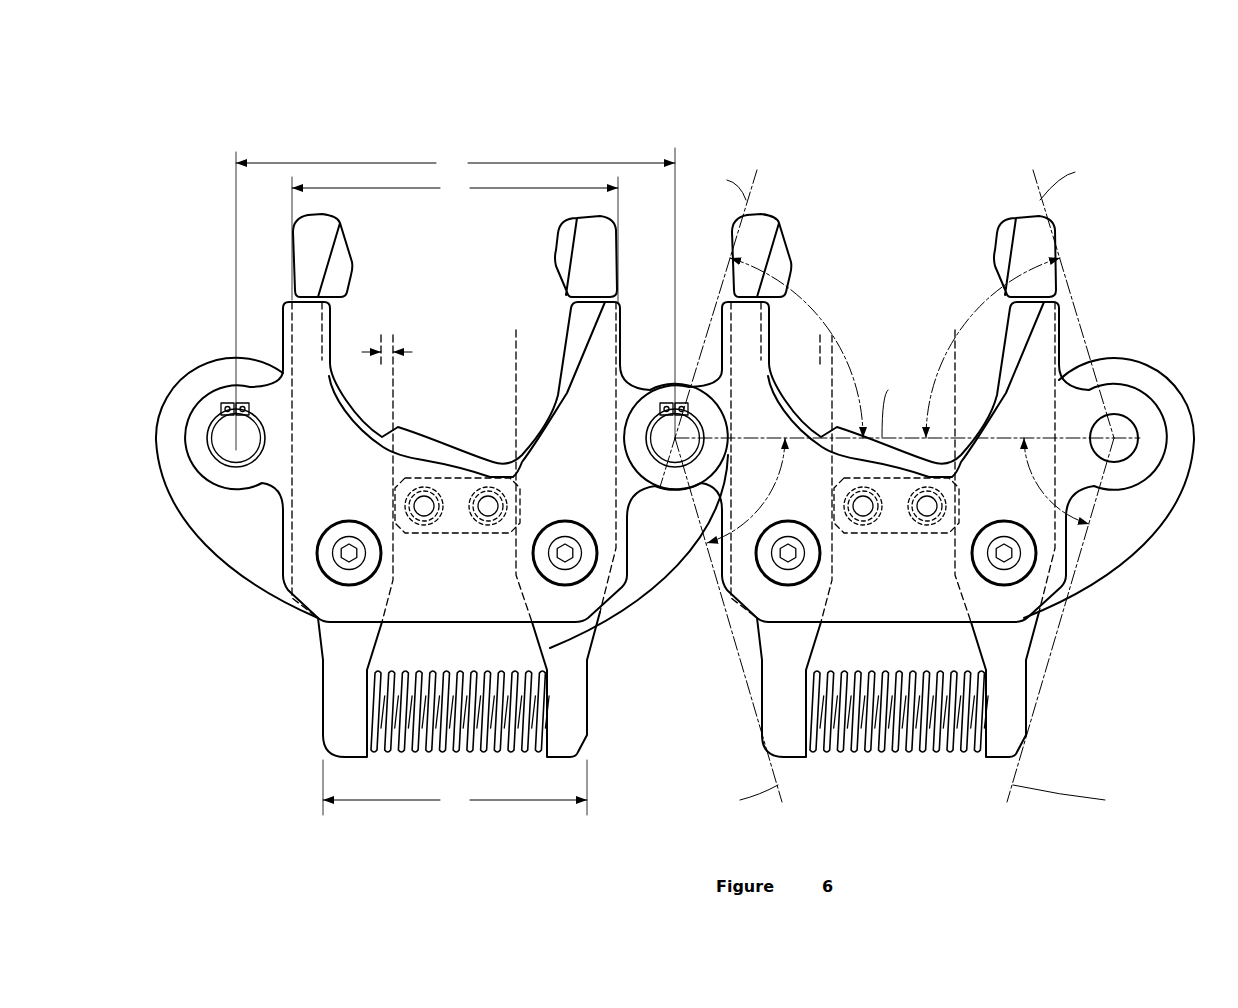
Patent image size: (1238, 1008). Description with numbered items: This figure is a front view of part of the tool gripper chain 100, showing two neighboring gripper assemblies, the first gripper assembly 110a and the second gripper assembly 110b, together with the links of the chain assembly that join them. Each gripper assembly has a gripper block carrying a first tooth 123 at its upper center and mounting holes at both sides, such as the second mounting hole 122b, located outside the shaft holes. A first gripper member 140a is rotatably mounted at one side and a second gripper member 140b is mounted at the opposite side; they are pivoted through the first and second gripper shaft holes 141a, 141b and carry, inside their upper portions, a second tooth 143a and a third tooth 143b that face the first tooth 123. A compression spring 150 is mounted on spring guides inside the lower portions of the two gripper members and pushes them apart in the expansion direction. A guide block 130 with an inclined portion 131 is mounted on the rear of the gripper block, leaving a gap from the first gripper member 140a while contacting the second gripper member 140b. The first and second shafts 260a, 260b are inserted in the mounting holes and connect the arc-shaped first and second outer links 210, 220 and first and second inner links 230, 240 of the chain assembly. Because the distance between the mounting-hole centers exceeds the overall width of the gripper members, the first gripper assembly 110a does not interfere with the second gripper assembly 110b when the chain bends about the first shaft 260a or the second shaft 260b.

The tool gripper chain 100 is at (674, 449).
The first gripper assembly 110a is at (368, 148).
The second gripper assembly 110b is at (1009, 148).
The second mounting hole 122b is at (1118, 437).
The first tooth 123 is at (420, 430).
The guide block 130 is at (449, 476).
The inclined portion 131 is at (397, 537).
The first gripper member 140a is at (320, 655).
The second gripper member 140b is at (588, 660).
The first gripper shaft hole 141a is at (340, 560).
The second gripper shaft hole 141b is at (572, 562).
The second tooth 143a is at (352, 268).
The third tooth 143b is at (556, 250).
The compression spring 150 is at (465, 748).
The second outer link 220 is at (235, 488).
The first outer link 210 is at (246, 574).
The second inner link 240 is at (1110, 491).
The first inner link 230 is at (1100, 573).
The first shaft 260a is at (237, 468).
The second shaft 260b is at (652, 458).